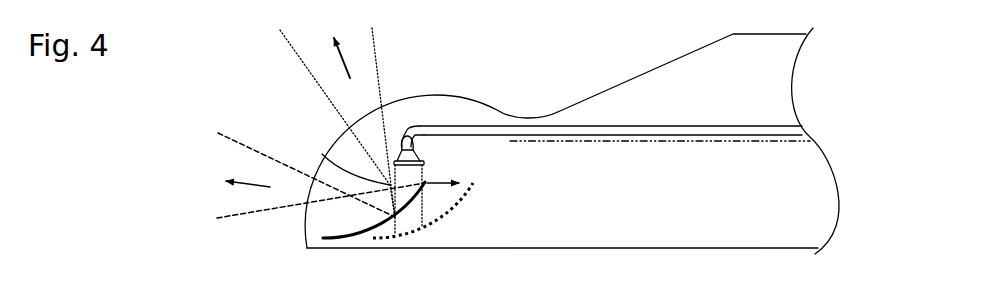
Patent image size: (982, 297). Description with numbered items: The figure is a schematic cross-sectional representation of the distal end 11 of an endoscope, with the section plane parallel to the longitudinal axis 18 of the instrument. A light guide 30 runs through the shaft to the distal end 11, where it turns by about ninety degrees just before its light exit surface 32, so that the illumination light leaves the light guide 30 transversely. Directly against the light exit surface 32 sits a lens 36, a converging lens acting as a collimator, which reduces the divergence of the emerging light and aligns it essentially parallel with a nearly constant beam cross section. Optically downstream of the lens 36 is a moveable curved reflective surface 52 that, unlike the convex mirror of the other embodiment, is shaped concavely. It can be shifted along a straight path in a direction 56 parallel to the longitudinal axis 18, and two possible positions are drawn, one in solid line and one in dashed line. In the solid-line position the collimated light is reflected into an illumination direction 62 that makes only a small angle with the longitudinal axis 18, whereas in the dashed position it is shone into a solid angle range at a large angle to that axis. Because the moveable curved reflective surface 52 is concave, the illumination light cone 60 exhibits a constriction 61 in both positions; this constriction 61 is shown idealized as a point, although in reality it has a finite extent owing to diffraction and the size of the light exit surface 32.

The distal end 11 is at (256, 70).
The longitudinal axis 18 is at (573, 141).
The light guide 30 is at (633, 128).
The light exit surface 32 is at (408, 138).
The lens 36 is at (422, 161).
The moveable curved reflective surface 52 is at (345, 238).
The direction of movement 56 is at (442, 180).
The illumination light cone 60 is at (248, 146).
The constriction 61 is at (353, 197).
The illumination direction 62 is at (243, 184).